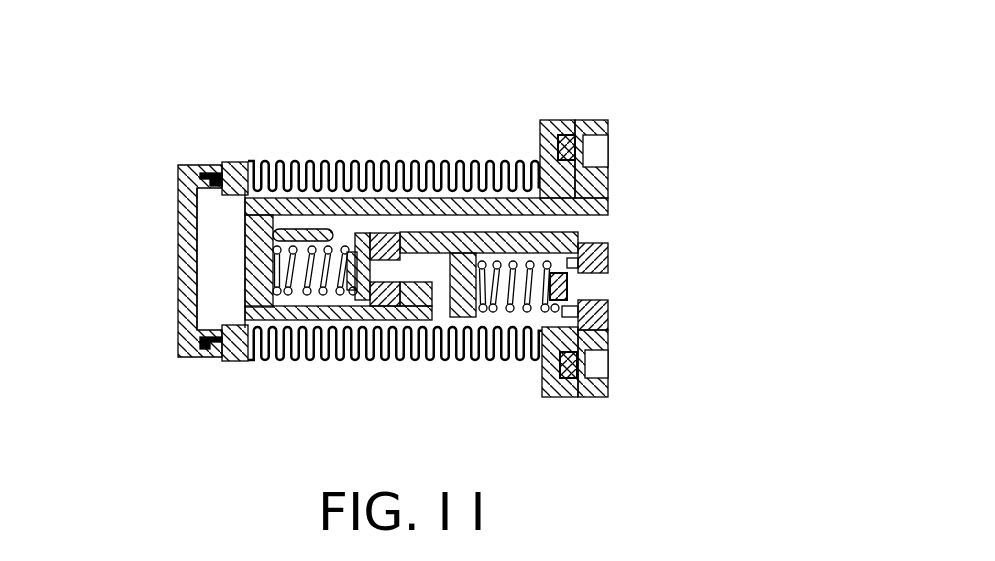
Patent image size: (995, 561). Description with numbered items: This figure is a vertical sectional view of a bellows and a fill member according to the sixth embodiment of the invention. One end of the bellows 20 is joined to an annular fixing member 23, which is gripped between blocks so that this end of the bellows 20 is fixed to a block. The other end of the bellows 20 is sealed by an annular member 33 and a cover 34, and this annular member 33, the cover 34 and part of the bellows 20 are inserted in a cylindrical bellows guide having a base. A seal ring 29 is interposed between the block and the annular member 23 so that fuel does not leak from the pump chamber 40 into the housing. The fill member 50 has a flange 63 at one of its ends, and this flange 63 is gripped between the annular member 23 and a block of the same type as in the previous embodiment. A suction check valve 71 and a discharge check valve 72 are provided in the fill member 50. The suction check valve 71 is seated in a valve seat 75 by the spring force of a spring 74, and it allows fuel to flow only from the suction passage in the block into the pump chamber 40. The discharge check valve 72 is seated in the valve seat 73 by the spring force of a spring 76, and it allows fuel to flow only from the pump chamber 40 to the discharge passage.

The bellows 20 is at (265, 161).
The annular fixing member 23 is at (563, 397).
The seal ring 29 is at (566, 132).
The annular member 33 is at (232, 363).
The cover 34 is at (180, 343).
The pump chamber 40 is at (213, 265).
The fill member 50 is at (240, 222).
The flange 63 is at (598, 120).
The suction check valve 71 is at (568, 285).
The discharge check valve 72 is at (360, 233).
The valve seat 73 is at (385, 233).
The spring 74 is at (505, 313).
The valve seat 75 is at (610, 252).
The spring 76 is at (308, 229).